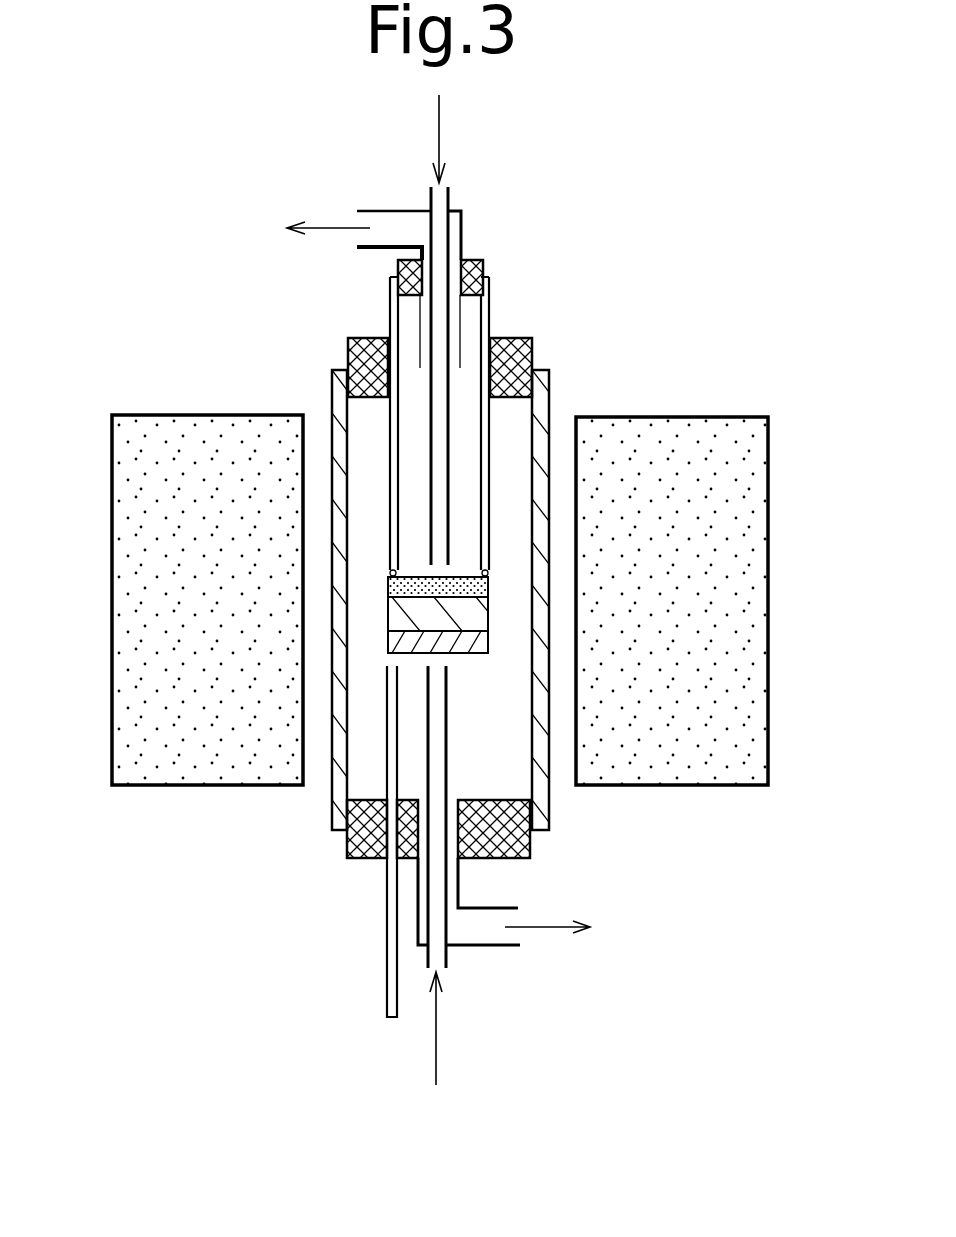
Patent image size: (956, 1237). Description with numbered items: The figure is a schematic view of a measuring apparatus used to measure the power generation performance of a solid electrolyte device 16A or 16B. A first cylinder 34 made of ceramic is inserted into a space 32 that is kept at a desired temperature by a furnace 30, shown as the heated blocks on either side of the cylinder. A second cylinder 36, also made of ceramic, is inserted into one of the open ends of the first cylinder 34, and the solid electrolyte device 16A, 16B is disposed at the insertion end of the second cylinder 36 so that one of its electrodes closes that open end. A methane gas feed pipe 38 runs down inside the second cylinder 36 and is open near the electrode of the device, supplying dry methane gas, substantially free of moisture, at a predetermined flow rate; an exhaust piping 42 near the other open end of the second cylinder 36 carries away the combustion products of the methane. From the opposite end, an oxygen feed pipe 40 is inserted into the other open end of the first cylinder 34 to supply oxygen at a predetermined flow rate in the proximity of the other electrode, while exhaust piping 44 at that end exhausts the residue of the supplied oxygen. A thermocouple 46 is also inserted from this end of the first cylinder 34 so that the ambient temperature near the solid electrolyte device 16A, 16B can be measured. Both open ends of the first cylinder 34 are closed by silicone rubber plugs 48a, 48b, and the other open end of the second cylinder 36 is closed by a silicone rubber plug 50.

The solid electrolyte device 16A is at (320, 712).
The solid electrolyte device 16B is at (380, 642).
The furnace 30 is at (128, 478).
The space 32 is at (332, 592).
The first cylinder 34 is at (543, 402).
The second cylinder 36 is at (487, 312).
The methane gas feed pipe 38 is at (437, 456).
The oxygen feed pipe 40 is at (440, 735).
The exhaust piping 42 is at (375, 218).
The exhaust piping 44 is at (497, 943).
The thermocouple 46 is at (387, 977).
The plug 48a is at (372, 340).
The plug 48b is at (348, 847).
The plug 50 is at (473, 263).